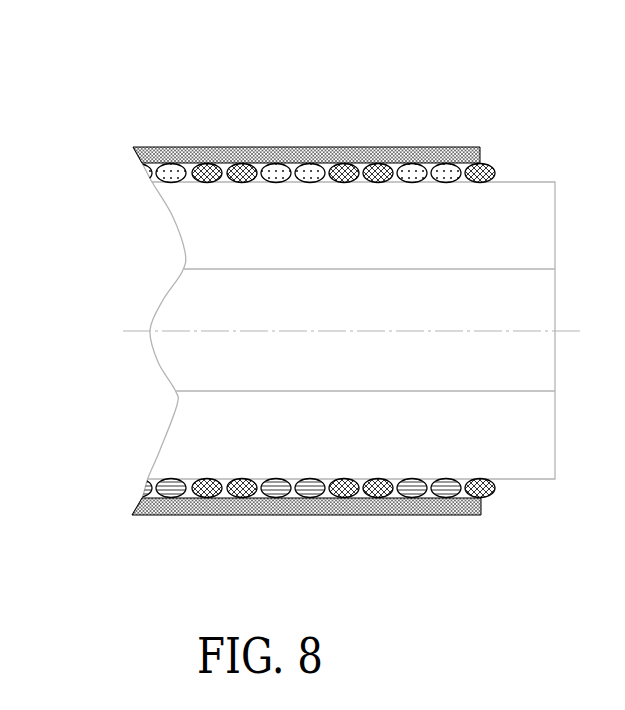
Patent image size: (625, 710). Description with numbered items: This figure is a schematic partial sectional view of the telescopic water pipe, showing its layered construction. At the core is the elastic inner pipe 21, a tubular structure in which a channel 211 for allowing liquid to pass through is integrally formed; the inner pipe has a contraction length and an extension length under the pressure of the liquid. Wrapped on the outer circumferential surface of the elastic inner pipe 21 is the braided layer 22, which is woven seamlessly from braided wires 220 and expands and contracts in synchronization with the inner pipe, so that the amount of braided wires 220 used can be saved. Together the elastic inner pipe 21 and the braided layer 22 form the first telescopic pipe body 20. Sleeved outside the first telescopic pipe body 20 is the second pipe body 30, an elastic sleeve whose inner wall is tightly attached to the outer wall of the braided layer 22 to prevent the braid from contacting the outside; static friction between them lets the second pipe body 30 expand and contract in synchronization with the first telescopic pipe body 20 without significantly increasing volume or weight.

The first telescopic pipe body 20 is at (477, 122).
The elastic inner pipe 21 is at (218, 223).
The channel 211 is at (207, 310).
The braided layer 22 is at (183, 168).
The braided wires 220 is at (150, 167).
The second pipe body 30 is at (243, 146).